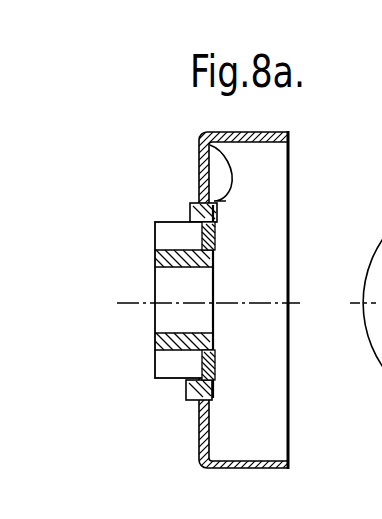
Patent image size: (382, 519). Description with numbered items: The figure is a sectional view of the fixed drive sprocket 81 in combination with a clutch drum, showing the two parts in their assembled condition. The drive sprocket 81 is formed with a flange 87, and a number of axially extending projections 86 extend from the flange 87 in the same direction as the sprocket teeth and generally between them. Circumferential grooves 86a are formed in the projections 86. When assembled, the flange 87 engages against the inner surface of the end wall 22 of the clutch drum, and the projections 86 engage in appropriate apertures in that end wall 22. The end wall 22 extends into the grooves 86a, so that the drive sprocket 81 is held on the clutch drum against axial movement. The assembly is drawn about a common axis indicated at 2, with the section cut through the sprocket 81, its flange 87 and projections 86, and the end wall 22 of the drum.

The shaft / bore axis 2 is at (183, 313).
The end wall 22 is at (198, 422).
The fixed drive sprocket 81 is at (155, 257).
The axially extending projections 86 is at (190, 207).
The circumferential grooves 86a is at (203, 146).
The flange 87 is at (218, 238).